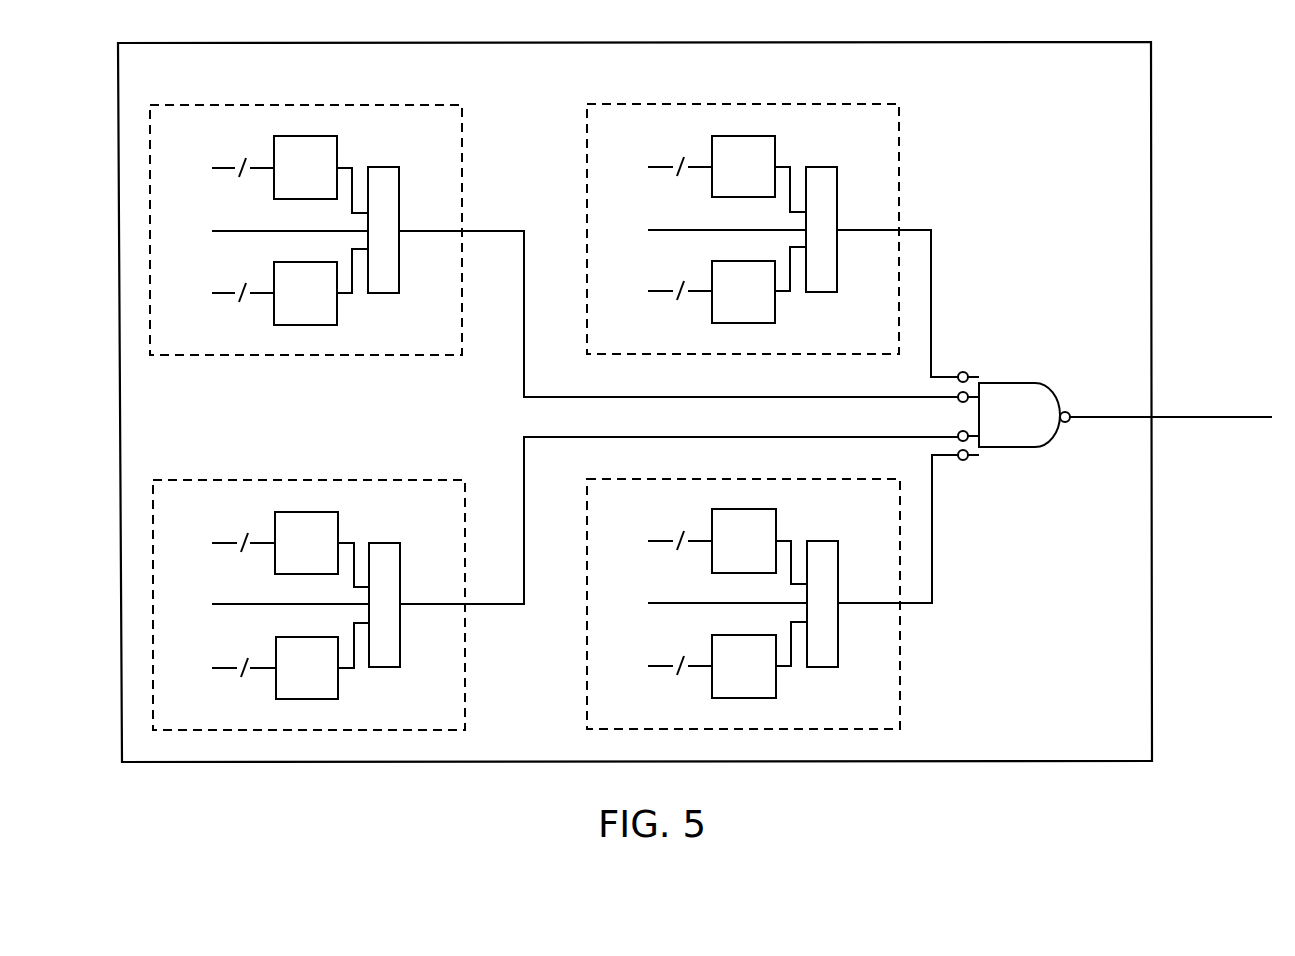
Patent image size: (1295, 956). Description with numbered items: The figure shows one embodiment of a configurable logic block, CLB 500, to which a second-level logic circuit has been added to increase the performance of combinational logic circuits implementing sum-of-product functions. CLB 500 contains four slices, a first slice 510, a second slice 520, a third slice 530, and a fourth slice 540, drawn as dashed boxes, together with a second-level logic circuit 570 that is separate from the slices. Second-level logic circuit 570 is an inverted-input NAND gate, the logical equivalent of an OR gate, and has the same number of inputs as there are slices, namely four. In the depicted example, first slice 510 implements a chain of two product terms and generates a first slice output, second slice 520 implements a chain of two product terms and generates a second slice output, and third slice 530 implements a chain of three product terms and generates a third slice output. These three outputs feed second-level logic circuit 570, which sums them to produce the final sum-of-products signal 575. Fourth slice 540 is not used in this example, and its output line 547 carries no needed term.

The CLB 500 is at (635, 382).
The first slice 510 is at (554, 232).
The second slice 520 is at (899, 136).
The third slice 530 is at (555, 583).
The fourth slice 540 is at (900, 697).
The S4-out signal line 547 is at (941, 529).
The second-level logic circuit 570 is at (1032, 404).
The final sum-of-products signal 575 is at (1172, 426).